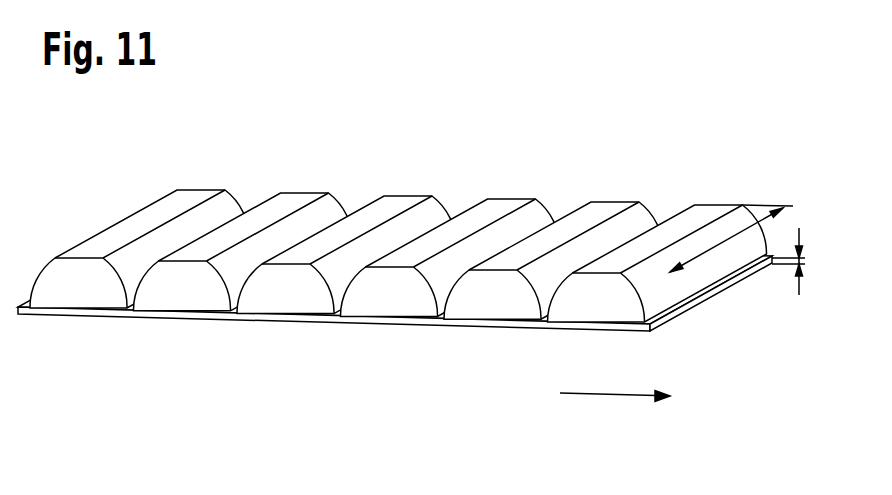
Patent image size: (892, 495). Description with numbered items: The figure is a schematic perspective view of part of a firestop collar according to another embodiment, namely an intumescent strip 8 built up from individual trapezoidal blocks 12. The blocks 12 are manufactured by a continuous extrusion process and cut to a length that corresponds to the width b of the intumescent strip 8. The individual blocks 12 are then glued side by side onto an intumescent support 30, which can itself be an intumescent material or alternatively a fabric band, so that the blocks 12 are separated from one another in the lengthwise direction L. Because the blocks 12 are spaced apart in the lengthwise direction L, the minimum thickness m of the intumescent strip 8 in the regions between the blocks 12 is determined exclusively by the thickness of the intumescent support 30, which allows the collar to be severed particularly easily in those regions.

The intumescent strip 8 is at (395, 238).
The trapezoidal blocks 12 is at (295, 188).
The intumescent support 30 is at (437, 323).
The width of the intumescent strip b is at (767, 205).
The minimum thickness of the intumescent strip m is at (800, 268).
The lengthwise direction L is at (608, 397).